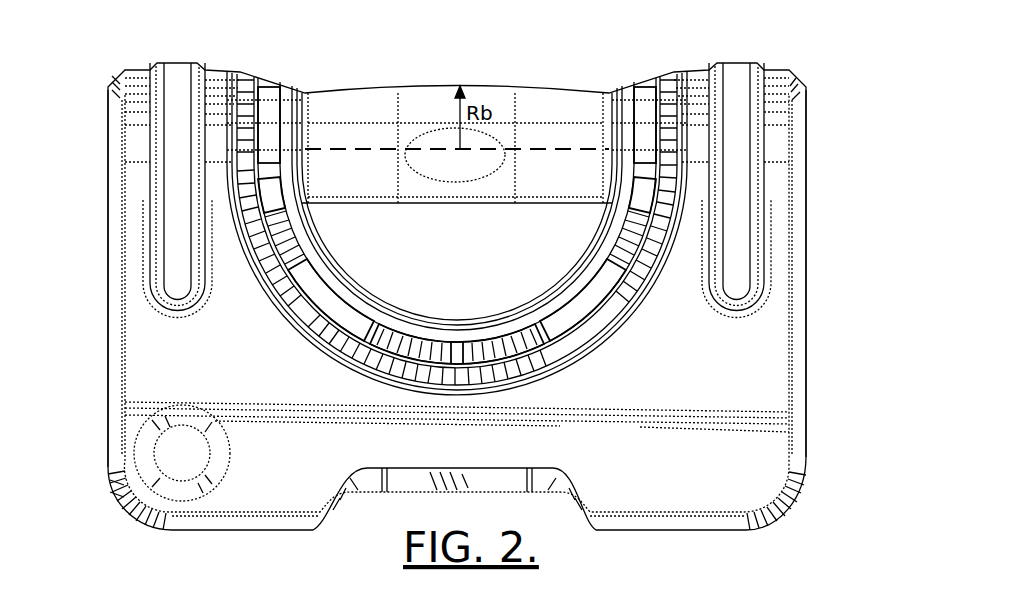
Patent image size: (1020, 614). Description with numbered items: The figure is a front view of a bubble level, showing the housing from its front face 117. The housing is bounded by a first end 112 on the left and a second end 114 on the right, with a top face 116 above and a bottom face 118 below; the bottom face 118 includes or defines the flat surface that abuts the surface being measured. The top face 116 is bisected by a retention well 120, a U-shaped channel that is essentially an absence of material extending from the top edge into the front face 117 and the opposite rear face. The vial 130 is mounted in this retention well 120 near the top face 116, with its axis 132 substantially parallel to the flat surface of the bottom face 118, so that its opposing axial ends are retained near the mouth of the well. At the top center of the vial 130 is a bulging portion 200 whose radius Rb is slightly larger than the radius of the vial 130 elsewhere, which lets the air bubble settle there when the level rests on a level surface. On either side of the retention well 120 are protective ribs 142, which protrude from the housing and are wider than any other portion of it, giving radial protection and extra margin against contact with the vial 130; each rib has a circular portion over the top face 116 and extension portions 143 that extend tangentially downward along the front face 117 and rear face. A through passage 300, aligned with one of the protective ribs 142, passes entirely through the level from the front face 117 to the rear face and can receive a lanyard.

The first end 112 is at (110, 328).
The second end 114 is at (806, 393).
The top face 116 is at (772, 88).
The front face 117 is at (457, 400).
The bottom face 118 is at (330, 528).
The retention well 120 is at (515, 303).
The vial 130 is at (427, 203).
The axis 132 is at (353, 149).
The protective ribs 142 is at (173, 140).
The extension portions 143 is at (170, 230).
The bulging portion 200 is at (436, 74).
The through passage 300 is at (166, 476).